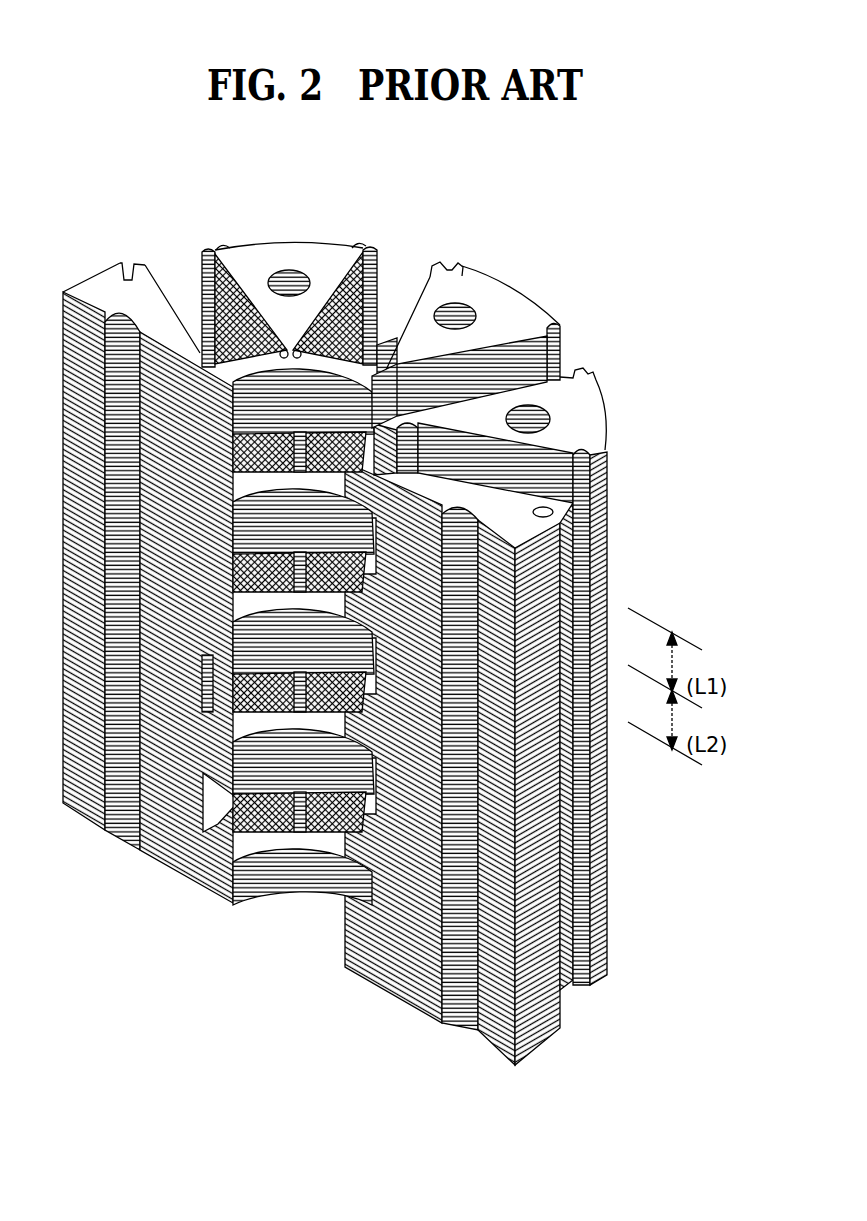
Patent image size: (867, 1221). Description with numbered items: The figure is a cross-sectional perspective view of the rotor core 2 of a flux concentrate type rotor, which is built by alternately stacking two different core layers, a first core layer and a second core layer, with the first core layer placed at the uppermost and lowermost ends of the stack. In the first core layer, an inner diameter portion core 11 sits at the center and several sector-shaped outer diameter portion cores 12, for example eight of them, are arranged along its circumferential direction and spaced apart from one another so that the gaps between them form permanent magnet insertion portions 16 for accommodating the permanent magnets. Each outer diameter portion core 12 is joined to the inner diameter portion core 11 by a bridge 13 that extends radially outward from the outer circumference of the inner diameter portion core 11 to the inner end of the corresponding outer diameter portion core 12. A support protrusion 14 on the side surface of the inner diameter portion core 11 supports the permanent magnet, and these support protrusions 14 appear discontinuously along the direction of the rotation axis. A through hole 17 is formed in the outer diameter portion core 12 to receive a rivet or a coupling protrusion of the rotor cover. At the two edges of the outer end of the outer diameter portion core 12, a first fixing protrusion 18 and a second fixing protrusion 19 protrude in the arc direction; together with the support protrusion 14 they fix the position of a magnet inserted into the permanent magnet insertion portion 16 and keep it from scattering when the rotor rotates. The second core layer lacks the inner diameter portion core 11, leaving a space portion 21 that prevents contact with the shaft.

The rotor core 2 is at (383, 617).
The inner diameter portion core 11 is at (151, 573).
The outer diameter portion core 12 is at (279, 246).
The bridge 13 is at (406, 410).
The support protrusion 14 is at (376, 300).
The permanent magnet insertion portion 16 is at (158, 262).
The through hole 17 is at (458, 316).
The first fixing protrusion 18 is at (375, 250).
The second fixing protrusion 19 is at (437, 268).
The space portion 21 is at (222, 803).